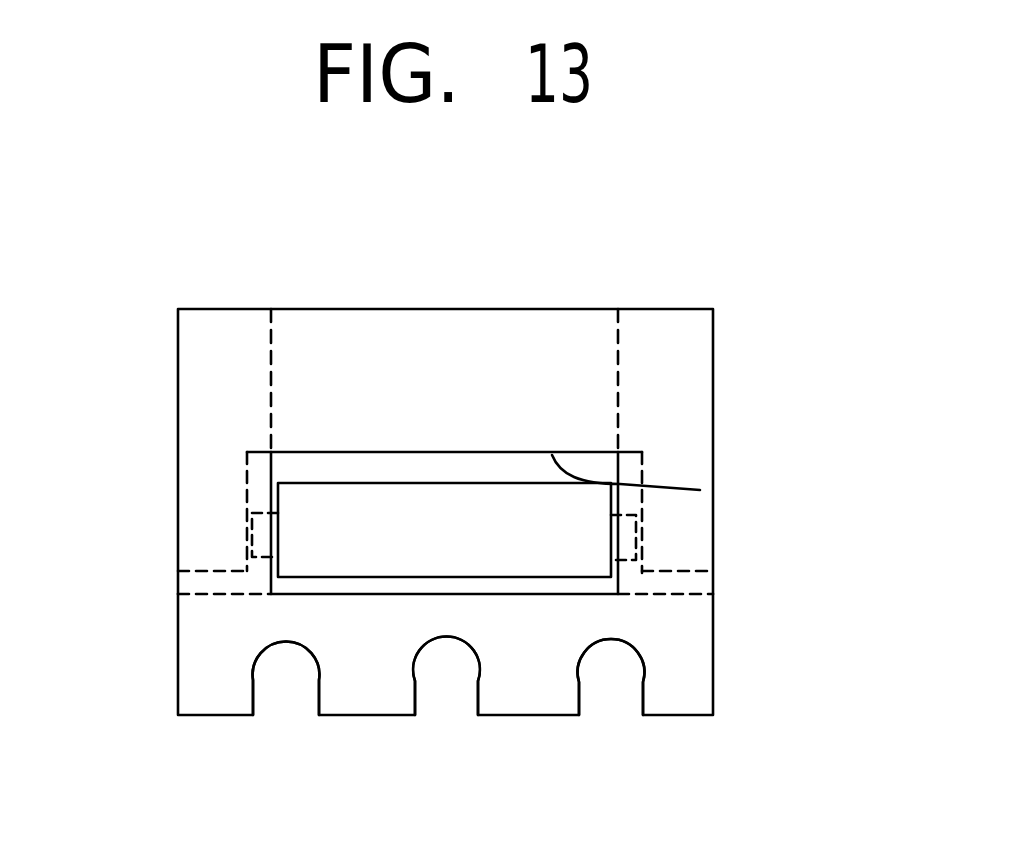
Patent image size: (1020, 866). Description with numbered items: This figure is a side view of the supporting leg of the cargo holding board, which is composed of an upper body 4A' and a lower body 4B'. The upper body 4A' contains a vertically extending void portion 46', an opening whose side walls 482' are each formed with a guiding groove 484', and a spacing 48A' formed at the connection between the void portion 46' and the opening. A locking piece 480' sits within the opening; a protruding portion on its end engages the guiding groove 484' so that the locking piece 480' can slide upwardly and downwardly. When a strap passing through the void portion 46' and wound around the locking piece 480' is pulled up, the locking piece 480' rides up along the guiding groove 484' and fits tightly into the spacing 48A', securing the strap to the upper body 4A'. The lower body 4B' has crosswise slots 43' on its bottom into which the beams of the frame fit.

The upper body 4A' is at (537, 451).
The lower body 4B' is at (537, 654).
The crosswise slots 43' is at (368, 718).
The void portion 46' is at (488, 377).
The locking piece 480' is at (444, 394).
The side walls 482' is at (444, 294).
The guiding groove 484' is at (462, 490).
The spacing 48A' is at (726, 513).